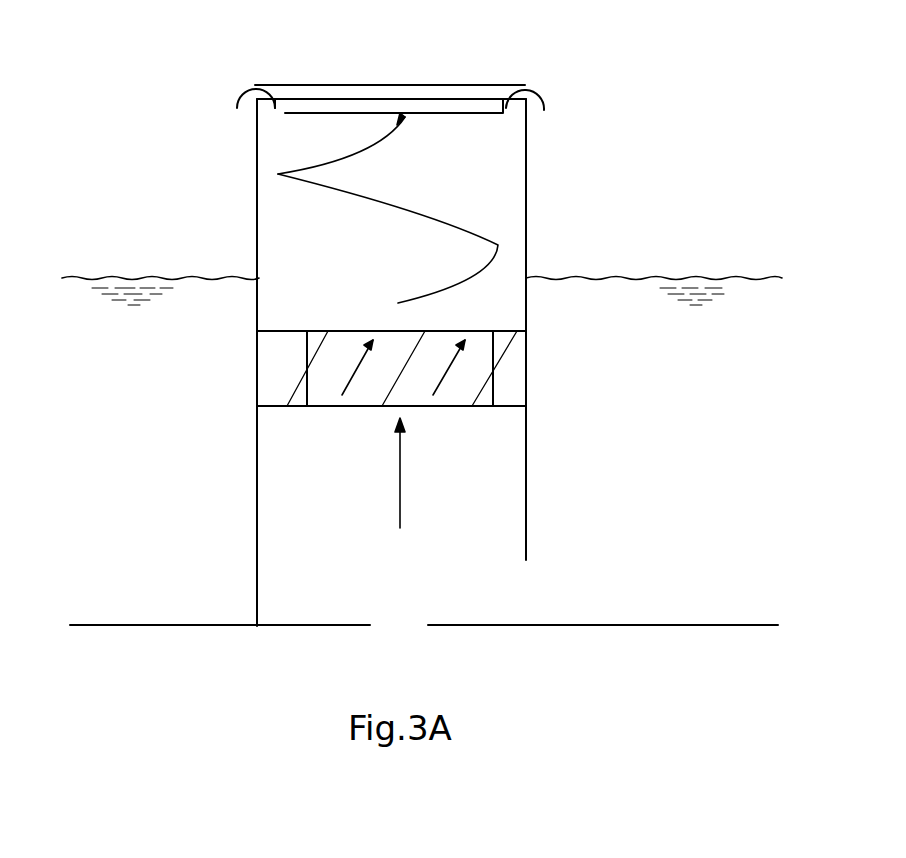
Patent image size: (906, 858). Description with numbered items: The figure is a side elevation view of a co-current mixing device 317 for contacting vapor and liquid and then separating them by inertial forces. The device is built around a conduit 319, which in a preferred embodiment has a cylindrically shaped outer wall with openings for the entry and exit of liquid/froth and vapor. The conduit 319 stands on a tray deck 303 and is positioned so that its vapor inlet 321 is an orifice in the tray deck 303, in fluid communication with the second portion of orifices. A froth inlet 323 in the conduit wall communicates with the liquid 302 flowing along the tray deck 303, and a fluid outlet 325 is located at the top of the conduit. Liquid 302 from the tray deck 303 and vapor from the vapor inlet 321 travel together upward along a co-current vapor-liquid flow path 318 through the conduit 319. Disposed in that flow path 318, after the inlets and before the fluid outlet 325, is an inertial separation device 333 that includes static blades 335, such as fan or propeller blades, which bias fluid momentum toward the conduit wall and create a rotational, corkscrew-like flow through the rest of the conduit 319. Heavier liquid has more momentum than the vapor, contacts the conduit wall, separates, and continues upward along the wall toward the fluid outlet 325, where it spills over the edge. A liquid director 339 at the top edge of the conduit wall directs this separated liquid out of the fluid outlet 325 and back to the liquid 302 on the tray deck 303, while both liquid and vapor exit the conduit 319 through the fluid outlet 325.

The liquid 302 is at (670, 278).
The tray deck 303 is at (678, 626).
The co-current mixing device 317 is at (603, 87).
The co-current vapor-liquid flow path 318 is at (498, 247).
The conduit 319 is at (527, 197).
The vapor inlet 321 is at (395, 626).
The froth inlet 323 is at (522, 585).
The fluid outlet 325 is at (390, 100).
The inertial separation device 333 is at (280, 330).
The static blades 335 is at (413, 350).
The liquid director 339 is at (255, 83).